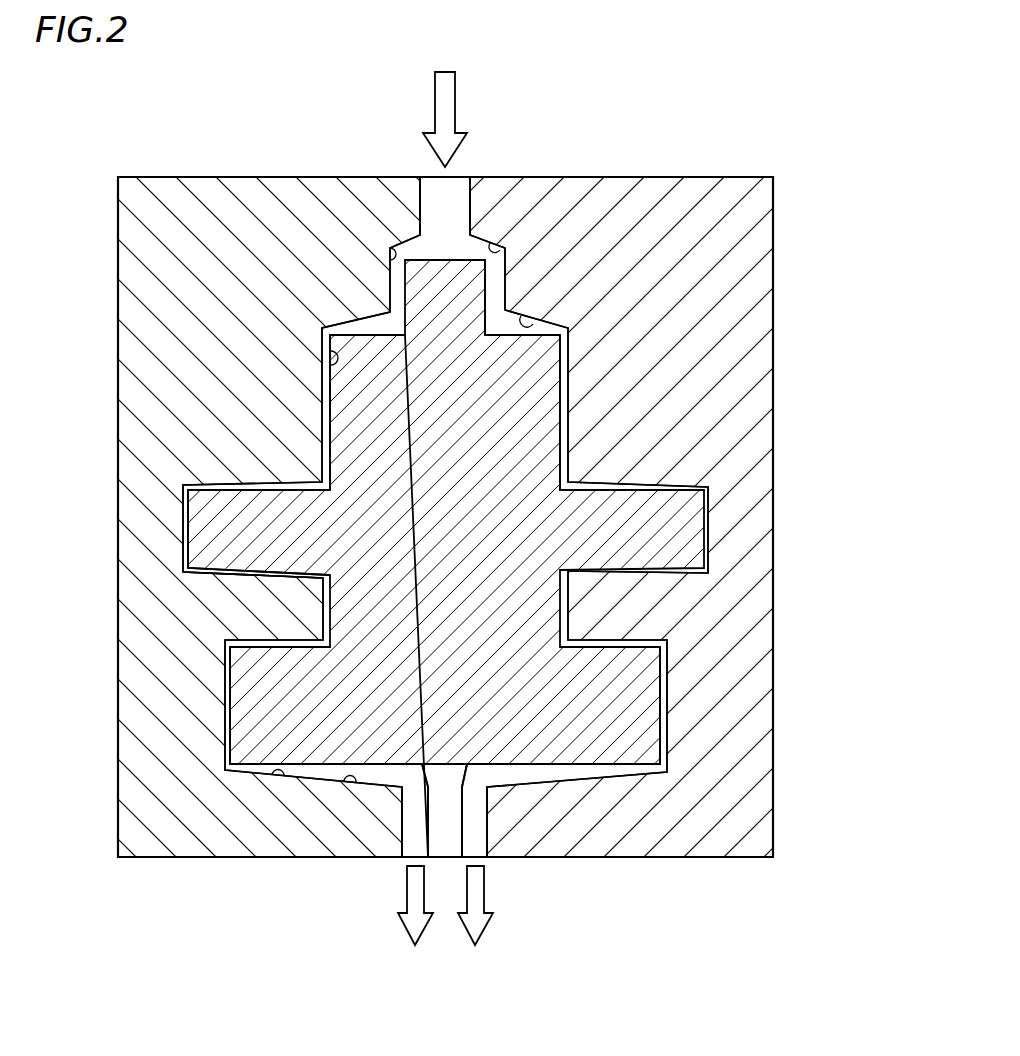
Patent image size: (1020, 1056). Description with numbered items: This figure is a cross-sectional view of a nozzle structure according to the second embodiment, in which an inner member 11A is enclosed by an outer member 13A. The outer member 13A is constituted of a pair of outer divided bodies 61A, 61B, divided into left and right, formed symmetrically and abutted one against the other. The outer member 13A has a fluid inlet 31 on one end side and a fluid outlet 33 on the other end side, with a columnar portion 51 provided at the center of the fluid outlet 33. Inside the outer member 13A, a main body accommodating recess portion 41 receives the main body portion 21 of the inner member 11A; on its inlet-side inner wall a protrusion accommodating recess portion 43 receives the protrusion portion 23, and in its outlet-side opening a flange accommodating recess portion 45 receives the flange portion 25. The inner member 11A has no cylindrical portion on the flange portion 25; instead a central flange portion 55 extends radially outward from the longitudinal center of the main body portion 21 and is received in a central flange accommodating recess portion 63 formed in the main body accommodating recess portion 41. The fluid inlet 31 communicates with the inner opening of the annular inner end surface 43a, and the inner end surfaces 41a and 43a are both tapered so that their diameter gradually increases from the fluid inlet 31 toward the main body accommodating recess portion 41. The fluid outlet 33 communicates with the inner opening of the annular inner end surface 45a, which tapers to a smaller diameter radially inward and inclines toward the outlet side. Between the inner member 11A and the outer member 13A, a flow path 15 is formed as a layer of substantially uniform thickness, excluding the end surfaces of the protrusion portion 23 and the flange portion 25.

The outer member 13A is at (510, 474).
The outer divided body 61A is at (137, 262).
The outer divided body 61B is at (773, 258).
The flow path 15 is at (568, 435).
The inner member 11A is at (510, 558).
The main body portion 21 is at (357, 423).
The protrusion portion 23 is at (417, 297).
The flange portion 25 is at (270, 723).
The central flange portion 55 is at (215, 525).
The central flange accommodating recess portion 63 is at (217, 578).
The fluid inlet 31 is at (437, 205).
The fluid outlet 33 is at (422, 827).
The columnar portion 51 is at (460, 817).
The main body accommodating recess portion 41 is at (326, 352).
The protrusion accommodating recess portion 43 is at (388, 252).
The inner end surface 41a is at (541, 320).
The inner end surface 43a is at (506, 244).
The flange accommodating recess portion 45 is at (278, 773).
The inner end surface 45a is at (350, 773).